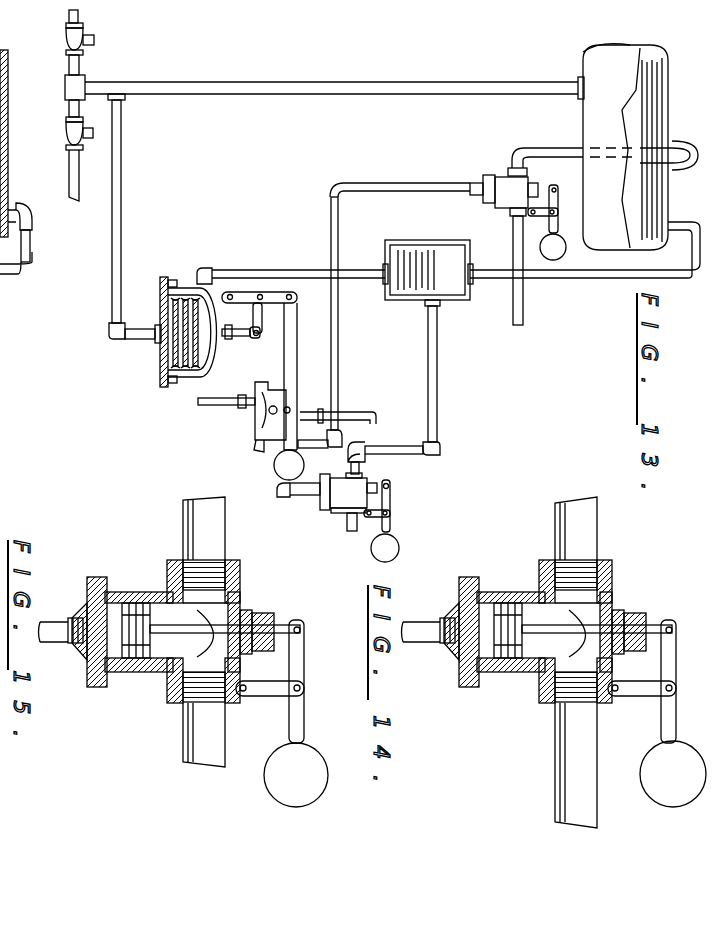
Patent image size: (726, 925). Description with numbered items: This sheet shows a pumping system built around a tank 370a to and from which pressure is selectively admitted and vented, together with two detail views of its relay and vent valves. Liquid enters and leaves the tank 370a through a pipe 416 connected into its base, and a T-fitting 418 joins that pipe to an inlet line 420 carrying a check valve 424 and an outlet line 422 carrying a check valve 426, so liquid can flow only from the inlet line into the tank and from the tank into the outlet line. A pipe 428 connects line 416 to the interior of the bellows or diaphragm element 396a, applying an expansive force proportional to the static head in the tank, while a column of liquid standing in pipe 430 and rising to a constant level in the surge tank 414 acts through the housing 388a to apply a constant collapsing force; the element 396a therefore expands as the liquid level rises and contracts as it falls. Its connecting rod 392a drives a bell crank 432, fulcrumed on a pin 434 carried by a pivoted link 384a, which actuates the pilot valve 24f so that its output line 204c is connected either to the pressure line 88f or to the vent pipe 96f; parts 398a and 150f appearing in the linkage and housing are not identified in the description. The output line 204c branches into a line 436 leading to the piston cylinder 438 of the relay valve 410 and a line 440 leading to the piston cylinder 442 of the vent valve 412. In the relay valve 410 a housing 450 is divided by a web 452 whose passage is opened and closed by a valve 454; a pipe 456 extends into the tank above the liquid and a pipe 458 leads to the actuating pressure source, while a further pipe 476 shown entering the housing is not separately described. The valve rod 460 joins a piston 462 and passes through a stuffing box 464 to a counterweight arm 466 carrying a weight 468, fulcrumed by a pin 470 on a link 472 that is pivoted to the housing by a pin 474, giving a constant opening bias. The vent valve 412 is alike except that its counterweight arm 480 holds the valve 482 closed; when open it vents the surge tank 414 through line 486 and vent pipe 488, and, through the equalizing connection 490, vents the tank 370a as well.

In FIG. 13, the check valve 424 is at (65, 38).
In FIG. 13, the inlet line 420 is at (81, 60).
In FIG. 13, the T-fitting 418 is at (65, 82).
In FIG. 13, the outlet line 422 is at (66, 124).
In FIG. 13, the check valve 426 is at (90, 172).
In FIG. 13, the pipe 416 is at (286, 95).
In FIG. 13, the pipe 428 is at (122, 157).
In FIG. 13, the pump flange plate 398a is at (162, 352).
In FIG. 13, the housing 388a is at (188, 374).
In FIG. 13, the pivoted link 384a is at (262, 292).
In FIG. 13, the bellows or diaphragm element 396a is at (199, 276).
In FIG. 13, the pin 434 is at (240, 328).
In FIG. 15, the pin 434 is at (160, 665).
In FIG. 13, the pipe 430 is at (310, 275).
In FIG. 14, the pipe 430 is at (528, 612).
In FIG. 13, the bell crank 432 is at (274, 307).
In FIG. 13, the float lever 150f is at (298, 310).
In FIG. 13, the output line 204c is at (276, 458).
In FIG. 13, the connecting rod 392a is at (256, 386).
In FIG. 13, the vent pipe 96f is at (216, 400).
In FIG. 13, the pilot valve 24f is at (256, 412).
In FIG. 13, the pressure line 88f is at (372, 411).
In FIG. 13, the branch 436 is at (340, 298).
In FIG. 13, the relay valve 410 is at (491, 168).
In FIG. 14, the relay valve 410 is at (517, 688).
In FIG. 13, the counterweight arm 466 is at (569, 207).
In FIG. 14, the counterweight arm 466 is at (684, 667).
In FIG. 13, the equalizing connection 490 is at (547, 278).
In FIG. 13, the piston cylinder 438 is at (516, 300).
In FIG. 13, the tank 370a is at (600, 250).
In FIG. 13, the surge tank 414 is at (427, 304).
In FIG. 13, the line 486 is at (438, 350).
In FIG. 15, the line 486 is at (258, 612).
In FIG. 13, the vent valve 412 is at (339, 516).
In FIG. 15, the vent valve 412 is at (183, 582).
In FIG. 13, the branch 440 is at (300, 491).
In FIG. 15, the branch 440 is at (68, 633).
In FIG. 13, the counterweight arm 480 is at (392, 496).
In FIG. 15, the counterweight arm 480 is at (304, 655).
In FIG. 13, the vent pipe 488 is at (371, 546).
In FIG. 15, the vent pipe 488 is at (222, 720).
In FIG. 14, the inlet pipe 476 is at (559, 520).
In FIG. 14, the valve 454 is at (548, 571).
In FIG. 14, the housing 450 is at (495, 633).
In FIG. 14, the pipe 456 is at (537, 657).
In FIG. 14, the pipe 458 is at (549, 743).
In FIG. 14, the rod 460 is at (537, 692).
In FIG. 14, the piston 462 is at (572, 672).
In FIG. 14, the stuffing box 464 is at (628, 597).
In FIG. 14, the web 452 is at (623, 683).
In FIG. 14, the pin 470 is at (659, 706).
In FIG. 14, the pin 474 is at (629, 706).
In FIG. 14, the link 472 is at (649, 701).
In FIG. 14, the weight 468 is at (673, 774).
In FIG. 15, the piston cylinder 442 is at (156, 632).
In FIG. 15, the valve 482 is at (212, 690).